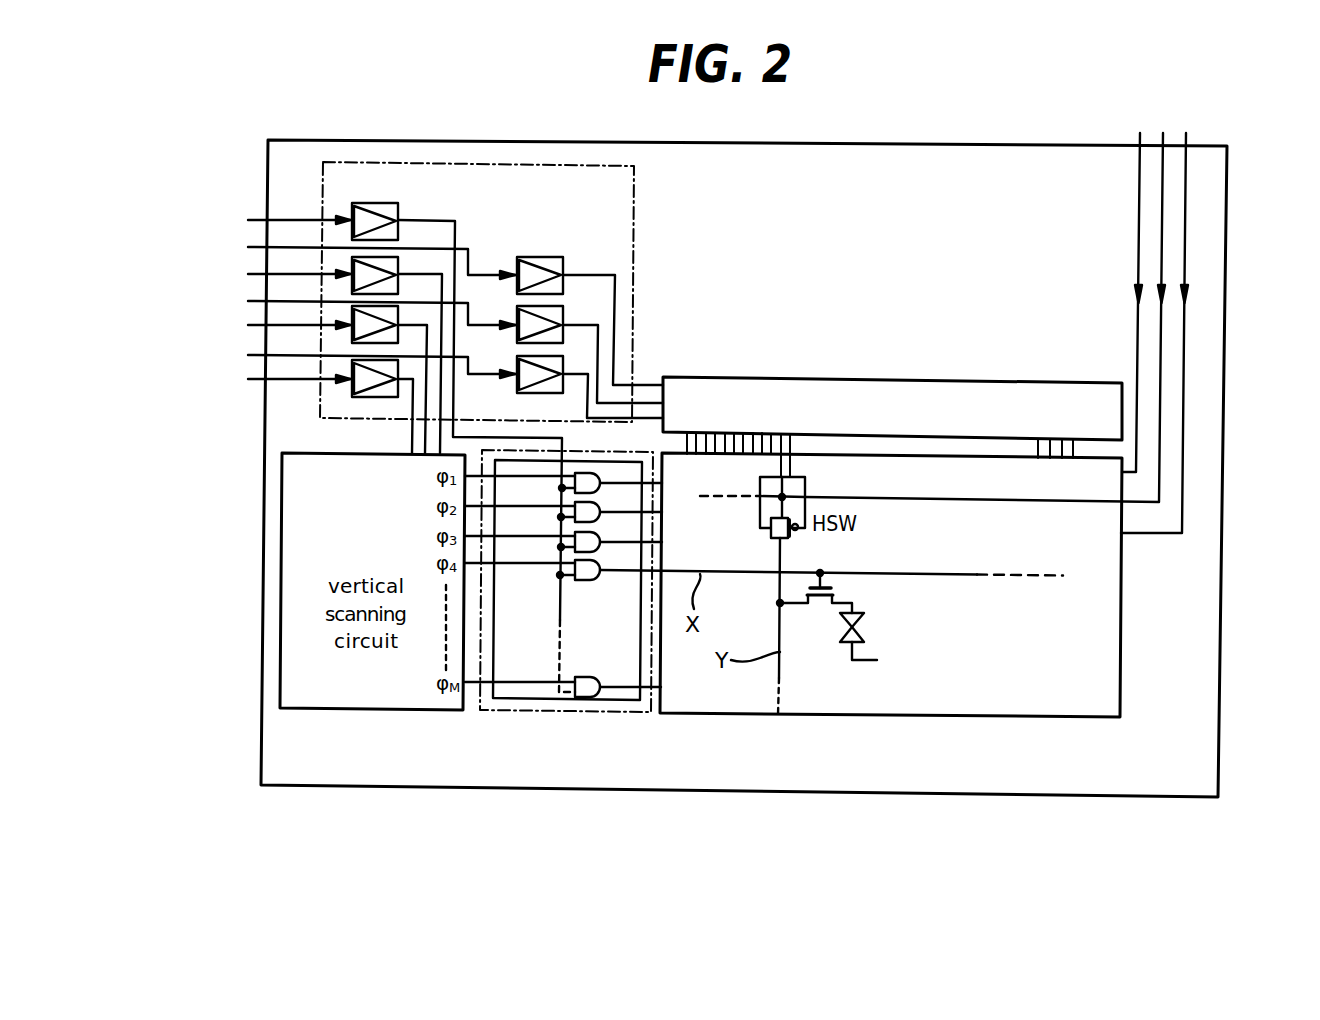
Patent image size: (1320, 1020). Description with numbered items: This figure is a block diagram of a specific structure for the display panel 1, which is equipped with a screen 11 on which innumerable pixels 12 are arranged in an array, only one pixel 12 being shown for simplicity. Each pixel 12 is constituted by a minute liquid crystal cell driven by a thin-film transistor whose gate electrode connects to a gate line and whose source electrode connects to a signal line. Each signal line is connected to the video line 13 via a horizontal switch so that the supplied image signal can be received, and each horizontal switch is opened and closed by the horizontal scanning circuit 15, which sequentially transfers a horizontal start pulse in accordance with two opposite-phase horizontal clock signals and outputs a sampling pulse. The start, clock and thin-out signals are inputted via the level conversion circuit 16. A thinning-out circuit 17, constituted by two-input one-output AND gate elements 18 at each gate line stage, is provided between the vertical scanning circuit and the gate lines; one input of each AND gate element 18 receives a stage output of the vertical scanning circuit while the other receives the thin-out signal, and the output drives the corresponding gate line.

The display panel 1 is at (1035, 796).
The screen 11 is at (884, 718).
The pixels 12 is at (921, 621).
The video line 13 is at (1049, 350).
The horizontal scanning circuit 15 is at (900, 378).
The level conversion circuit 16 is at (633, 230).
The thinning-out circuit 17 is at (620, 712).
The AND gate element 18 is at (582, 697).